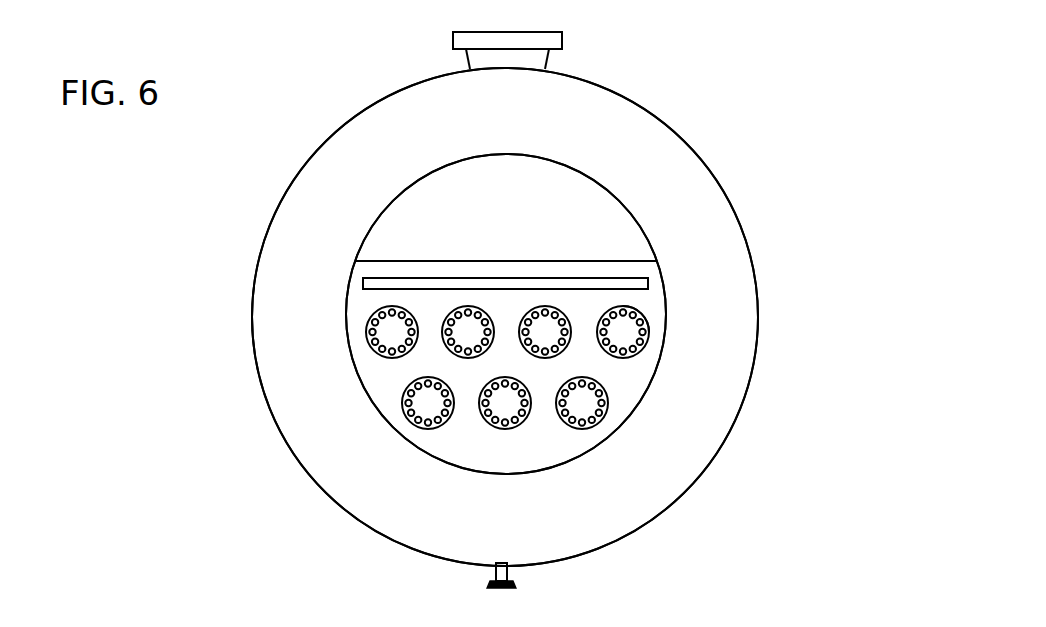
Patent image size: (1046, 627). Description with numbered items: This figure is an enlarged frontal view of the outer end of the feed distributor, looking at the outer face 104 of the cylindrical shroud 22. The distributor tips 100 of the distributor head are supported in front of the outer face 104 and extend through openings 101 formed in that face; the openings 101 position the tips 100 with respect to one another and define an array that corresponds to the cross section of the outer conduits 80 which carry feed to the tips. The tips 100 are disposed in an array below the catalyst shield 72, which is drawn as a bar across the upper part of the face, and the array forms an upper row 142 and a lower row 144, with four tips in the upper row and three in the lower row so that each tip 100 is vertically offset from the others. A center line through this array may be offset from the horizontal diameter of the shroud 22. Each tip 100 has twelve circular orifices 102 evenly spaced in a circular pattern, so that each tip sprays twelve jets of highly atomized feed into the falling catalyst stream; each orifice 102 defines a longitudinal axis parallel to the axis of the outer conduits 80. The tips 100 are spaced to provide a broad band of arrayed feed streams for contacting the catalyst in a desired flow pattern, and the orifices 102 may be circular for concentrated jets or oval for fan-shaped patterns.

The shroud 22 is at (607, 188).
The catalyst shield 72 is at (438, 280).
The outer conduits 80 is at (560, 317).
The distributor tips 100 is at (462, 333).
The openings 101 is at (523, 428).
The orifices 102 is at (645, 325).
The outer face 104 is at (442, 445).
The upper row 142 is at (742, 343).
The lower row 144 is at (741, 414).